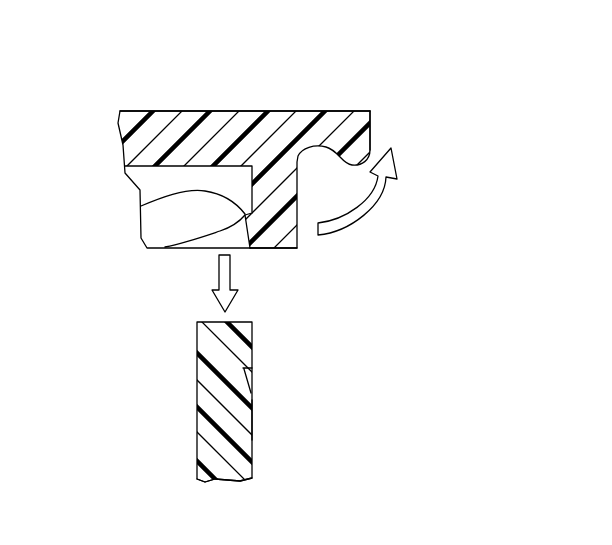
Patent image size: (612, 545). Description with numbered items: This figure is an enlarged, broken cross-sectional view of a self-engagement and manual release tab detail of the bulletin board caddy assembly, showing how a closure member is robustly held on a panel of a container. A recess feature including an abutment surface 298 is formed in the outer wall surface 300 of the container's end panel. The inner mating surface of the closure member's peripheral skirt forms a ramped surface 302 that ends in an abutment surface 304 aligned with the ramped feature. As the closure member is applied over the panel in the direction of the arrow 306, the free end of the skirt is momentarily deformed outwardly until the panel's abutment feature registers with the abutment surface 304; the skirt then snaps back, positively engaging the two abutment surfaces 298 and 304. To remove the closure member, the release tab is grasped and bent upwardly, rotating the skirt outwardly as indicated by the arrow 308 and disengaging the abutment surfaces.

The abutment surface 304 is at (141, 206).
The ramped surface 302 is at (165, 247).
The arrow 306 is at (223, 271).
The arrow 308 is at (370, 206).
The abutment surface 298 is at (253, 370).
The outer wall surface 300 is at (253, 447).